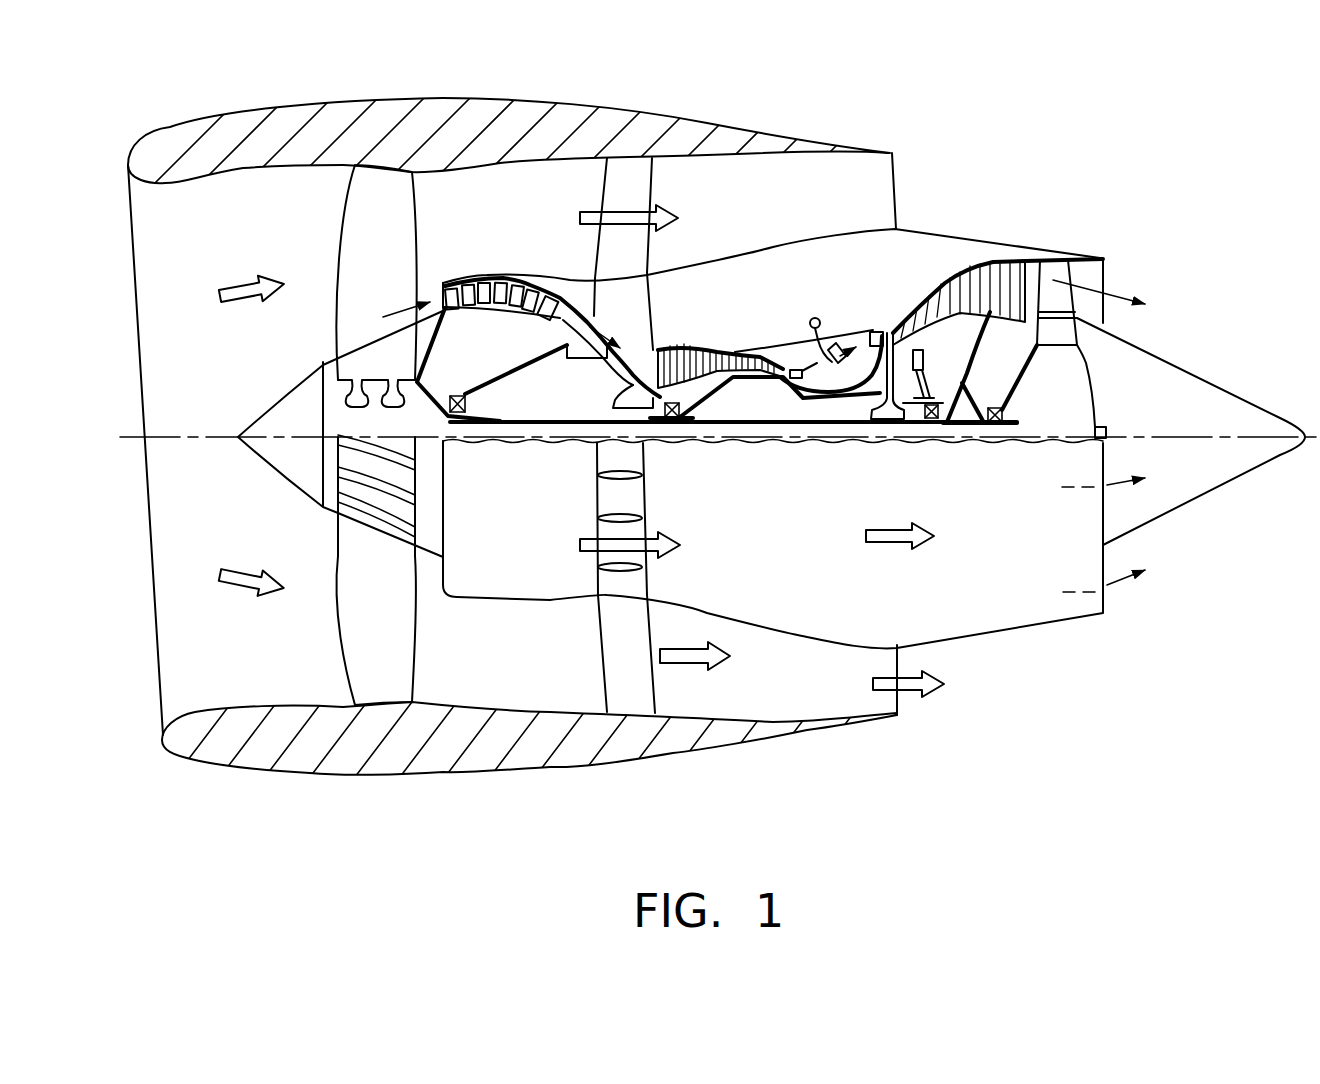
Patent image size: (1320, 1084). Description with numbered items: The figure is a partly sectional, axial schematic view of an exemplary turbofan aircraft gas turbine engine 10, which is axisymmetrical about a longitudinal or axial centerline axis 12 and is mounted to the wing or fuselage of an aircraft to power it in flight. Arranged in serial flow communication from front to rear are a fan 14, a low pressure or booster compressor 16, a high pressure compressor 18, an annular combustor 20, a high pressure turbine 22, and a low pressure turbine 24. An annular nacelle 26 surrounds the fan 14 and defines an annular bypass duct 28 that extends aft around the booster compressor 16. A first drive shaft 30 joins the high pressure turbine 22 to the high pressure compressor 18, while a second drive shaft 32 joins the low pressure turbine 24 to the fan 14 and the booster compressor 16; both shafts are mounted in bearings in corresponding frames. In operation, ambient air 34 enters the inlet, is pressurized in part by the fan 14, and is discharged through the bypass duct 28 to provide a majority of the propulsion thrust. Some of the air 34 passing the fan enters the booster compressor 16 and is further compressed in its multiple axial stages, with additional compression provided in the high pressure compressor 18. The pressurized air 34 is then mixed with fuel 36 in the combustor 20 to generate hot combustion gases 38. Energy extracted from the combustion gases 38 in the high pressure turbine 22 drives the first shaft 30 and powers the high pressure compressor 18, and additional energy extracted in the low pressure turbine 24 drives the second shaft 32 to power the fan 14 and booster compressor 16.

The turbofan aircraft gas turbine engine 10 is at (1063, 132).
The longitudinal or axial centerline axis 12 is at (1190, 437).
The fan 14 is at (397, 270).
The low pressure or booster compressor 16 is at (496, 272).
The high pressure compressor 18 is at (703, 334).
The annular combustor 20 is at (836, 337).
The high pressure turbine 22 is at (891, 318).
The low pressure turbine 24 is at (986, 250).
The annular nacelle 26 is at (447, 151).
The annular bypass duct 28 is at (783, 209).
The first drive shaft 30 is at (801, 398).
The second drive shaft 32 is at (722, 418).
The ambient air 34 is at (607, 323).
The fuel 36 is at (809, 310).
The hot combustion gases 38 is at (847, 336).